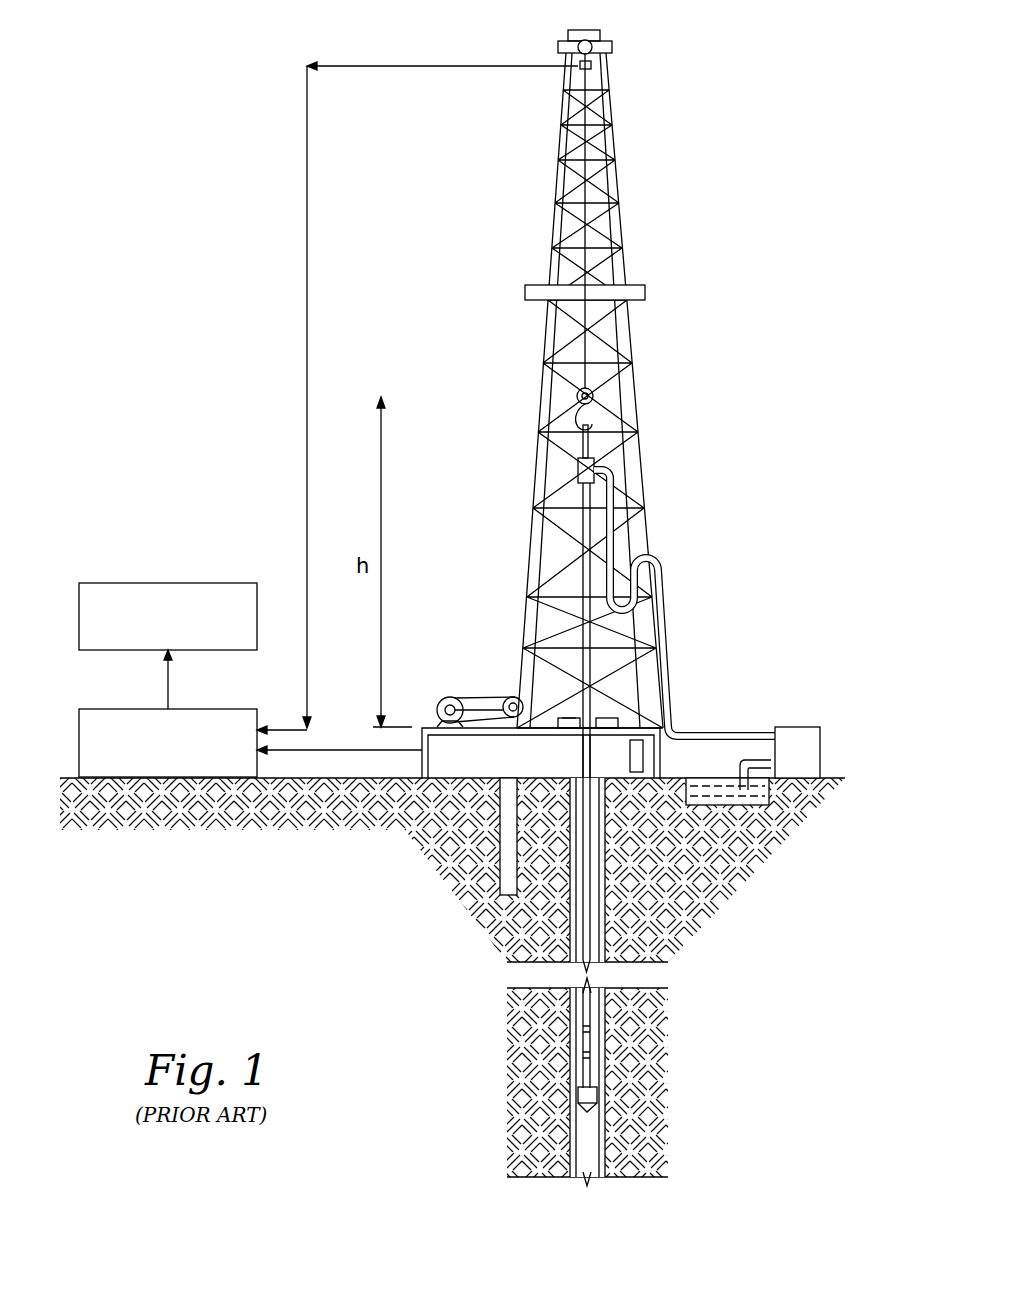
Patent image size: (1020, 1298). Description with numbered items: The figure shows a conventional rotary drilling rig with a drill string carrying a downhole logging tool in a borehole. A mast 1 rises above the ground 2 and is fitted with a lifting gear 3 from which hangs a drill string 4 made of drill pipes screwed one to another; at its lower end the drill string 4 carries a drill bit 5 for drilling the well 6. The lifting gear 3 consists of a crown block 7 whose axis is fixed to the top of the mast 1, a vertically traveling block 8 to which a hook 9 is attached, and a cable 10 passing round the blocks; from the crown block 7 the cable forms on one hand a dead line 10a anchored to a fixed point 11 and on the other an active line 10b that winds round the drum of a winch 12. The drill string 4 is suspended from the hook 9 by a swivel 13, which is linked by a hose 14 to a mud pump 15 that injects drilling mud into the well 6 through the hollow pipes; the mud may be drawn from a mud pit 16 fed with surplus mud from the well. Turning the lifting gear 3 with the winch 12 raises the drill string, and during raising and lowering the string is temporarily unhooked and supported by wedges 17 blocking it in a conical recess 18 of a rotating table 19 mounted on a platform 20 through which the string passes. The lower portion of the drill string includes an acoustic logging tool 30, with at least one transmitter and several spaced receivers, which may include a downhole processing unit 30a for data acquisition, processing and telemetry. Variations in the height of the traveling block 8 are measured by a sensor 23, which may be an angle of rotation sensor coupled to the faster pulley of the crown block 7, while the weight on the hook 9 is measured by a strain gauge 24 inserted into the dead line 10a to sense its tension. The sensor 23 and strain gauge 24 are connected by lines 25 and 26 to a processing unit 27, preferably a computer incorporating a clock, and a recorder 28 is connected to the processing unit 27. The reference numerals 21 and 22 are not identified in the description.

The mast 1 is at (628, 345).
The ground 2 is at (452, 776).
The lifting gear 3 is at (585, 353).
The drill string 4 is at (588, 1012).
The drill bit 5 is at (590, 1093).
The well 6 is at (590, 1152).
The crown block 7 is at (581, 42).
The traveling block 8 is at (578, 394).
The hook 9 is at (570, 425).
The cable 10 is at (603, 238).
The dead line 10a is at (625, 542).
The active line 10b is at (538, 531).
The fixed point 11 is at (638, 777).
The winch 12 is at (482, 697).
The swivel 13 is at (579, 466).
The hose 14 is at (670, 575).
The mud pump 15 is at (798, 727).
The mud pit 16 is at (713, 790).
The wedges 17 is at (564, 718).
The conical recess 18 is at (590, 726).
The rotating table 19 is at (558, 722).
The platform 20 is at (622, 728).
The drill string 21 is at (557, 574).
The mud pit 22 is at (506, 795).
The sensor 23 is at (592, 66).
The strain gauge 24 is at (645, 760).
The line 25 is at (300, 252).
The line 26 is at (325, 750).
The processing unit 27 is at (143, 709).
The recorder 28 is at (143, 583).
The tool 30 is at (590, 1062).
The processing unit 30a is at (590, 1040).